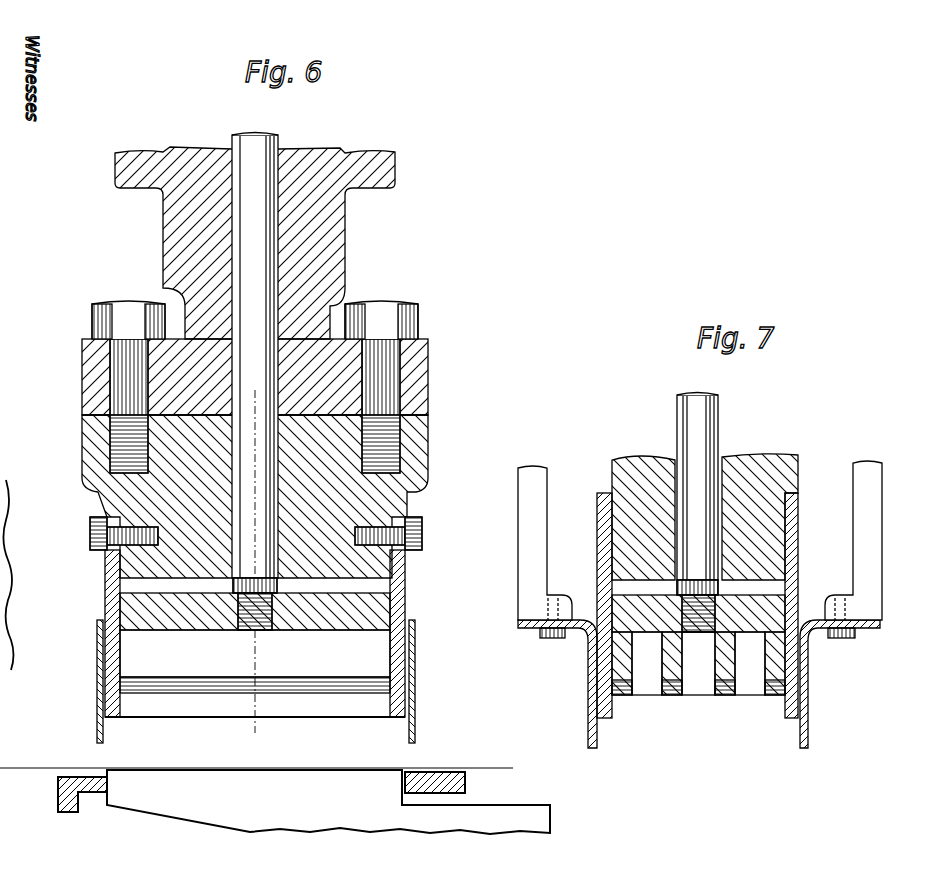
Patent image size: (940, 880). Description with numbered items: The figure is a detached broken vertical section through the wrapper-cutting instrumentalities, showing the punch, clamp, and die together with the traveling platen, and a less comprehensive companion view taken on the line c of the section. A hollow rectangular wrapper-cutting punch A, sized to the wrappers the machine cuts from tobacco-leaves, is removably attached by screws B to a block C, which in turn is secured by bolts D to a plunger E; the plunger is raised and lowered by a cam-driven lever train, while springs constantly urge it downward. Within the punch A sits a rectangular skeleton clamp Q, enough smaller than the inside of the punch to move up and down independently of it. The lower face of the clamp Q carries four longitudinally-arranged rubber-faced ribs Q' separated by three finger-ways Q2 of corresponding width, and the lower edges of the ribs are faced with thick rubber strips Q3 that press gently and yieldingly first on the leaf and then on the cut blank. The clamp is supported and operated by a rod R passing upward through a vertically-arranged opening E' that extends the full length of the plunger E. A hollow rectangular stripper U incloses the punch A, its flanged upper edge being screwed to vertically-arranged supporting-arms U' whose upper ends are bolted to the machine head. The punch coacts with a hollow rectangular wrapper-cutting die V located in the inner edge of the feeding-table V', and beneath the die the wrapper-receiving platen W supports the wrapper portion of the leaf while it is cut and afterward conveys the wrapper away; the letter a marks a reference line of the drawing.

In FIG. 6, the rod R is at (260, 148).
In FIG. 7, the rod R is at (704, 432).
In FIG. 6, the vertically-arranged opening E' is at (255, 243).
In FIG. 6, the plunger E is at (255, 377).
In FIG. 6, the bolts D is at (130, 298).
In FIG. 6, the block C is at (255, 496).
In FIG. 7, the block C is at (705, 517).
In FIG. 6, the section line c is at (255, 395).
In FIG. 6, the screws B is at (90, 540).
In FIG. 6, the wrapper-cutting punch A is at (405, 584).
In FIG. 7, the wrapper-cutting punch A is at (597, 567).
In FIG. 6, the stripper U is at (253, 681).
In FIG. 7, the stripper U is at (699, 684).
In FIG. 7, the supporting-arms U' is at (714, 549).
In FIG. 6, the clamp Q is at (255, 611).
In FIG. 7, the clamp Q is at (721, 608).
In FIG. 6, the rubber-faced ribs Q' is at (255, 653).
In FIG. 7, the rubber-faced ribs Q' is at (715, 688).
In FIG. 7, the finger-ways Q2 is at (698, 663).
In FIG. 6, the rubber strips Q3 is at (255, 666).
In FIG. 7, the rubber strips Q3 is at (622, 697).
In FIG. 6, the wrapper-cutting die V is at (92, 776).
In FIG. 6, the feeding-table V' is at (436, 767).
In FIG. 6, the wrapper-receiving platen W is at (283, 782).
In FIG. 6, the reference line a is at (257, 744).